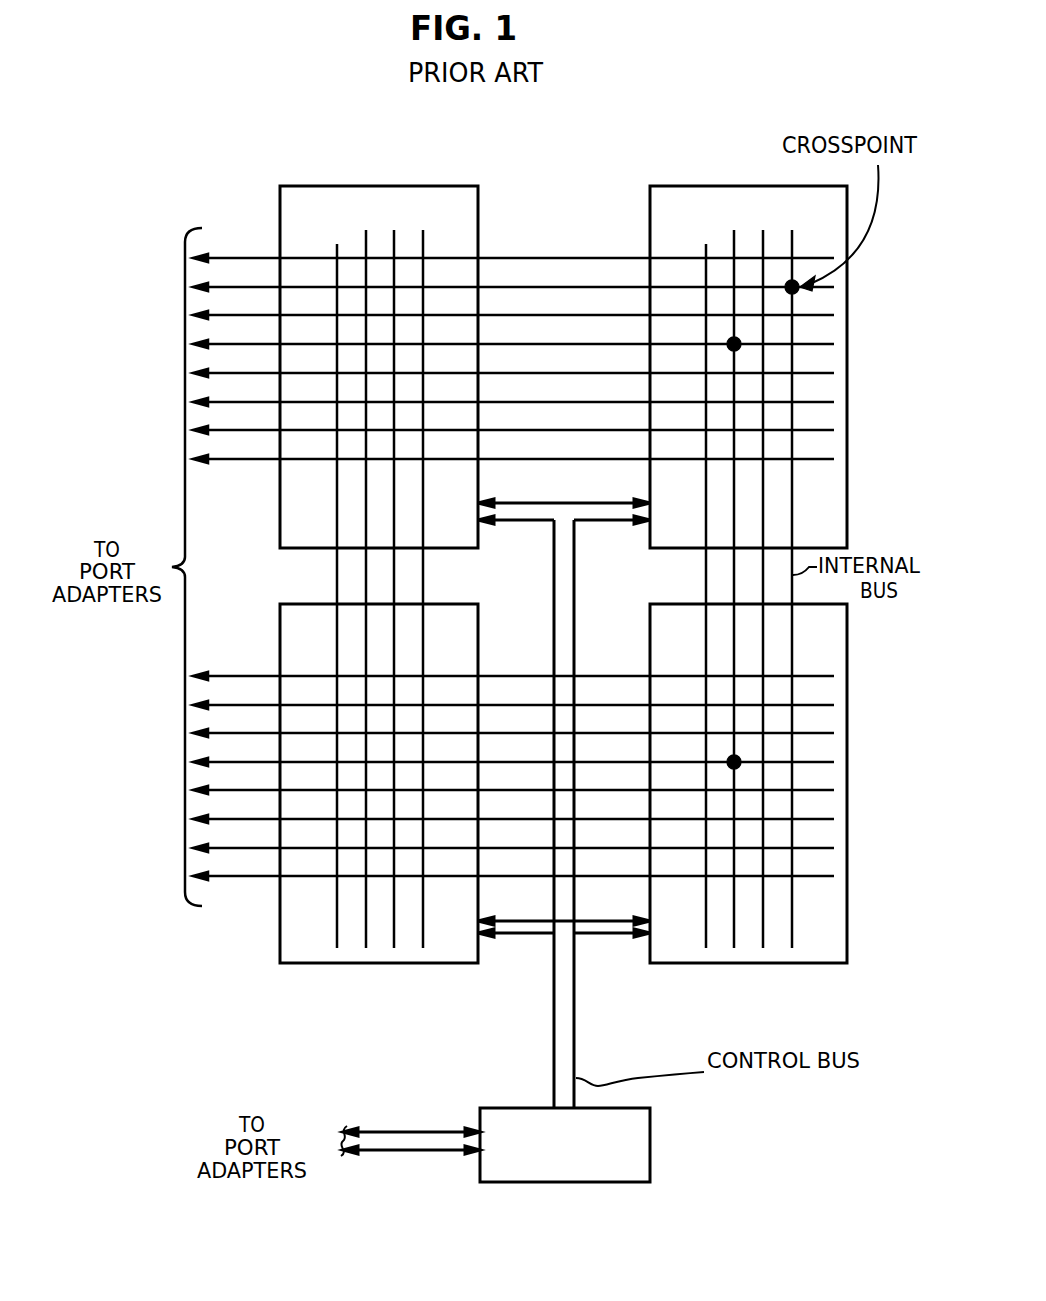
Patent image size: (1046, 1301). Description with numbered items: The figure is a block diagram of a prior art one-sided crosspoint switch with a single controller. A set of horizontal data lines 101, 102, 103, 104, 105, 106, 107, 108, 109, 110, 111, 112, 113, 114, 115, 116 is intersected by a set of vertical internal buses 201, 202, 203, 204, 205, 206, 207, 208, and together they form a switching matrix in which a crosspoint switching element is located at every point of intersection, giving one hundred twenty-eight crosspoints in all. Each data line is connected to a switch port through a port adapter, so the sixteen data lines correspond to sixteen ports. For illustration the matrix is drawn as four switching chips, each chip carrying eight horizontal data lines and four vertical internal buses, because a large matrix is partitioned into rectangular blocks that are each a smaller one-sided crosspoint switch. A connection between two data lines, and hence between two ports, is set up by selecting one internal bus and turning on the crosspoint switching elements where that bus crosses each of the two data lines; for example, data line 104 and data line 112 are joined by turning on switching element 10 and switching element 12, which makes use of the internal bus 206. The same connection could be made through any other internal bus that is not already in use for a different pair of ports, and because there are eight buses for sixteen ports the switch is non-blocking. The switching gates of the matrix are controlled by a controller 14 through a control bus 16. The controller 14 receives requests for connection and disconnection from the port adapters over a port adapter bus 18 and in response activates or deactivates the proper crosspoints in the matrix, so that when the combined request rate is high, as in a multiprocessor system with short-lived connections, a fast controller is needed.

The crosspoint switching element 10 is at (741, 342).
The crosspoint switching element 12 is at (740, 766).
The controller 14 is at (645, 1157).
The control bus 16 is at (554, 1040).
The port adapter bus 18 is at (430, 1143).
The data line 101 is at (268, 258).
The data line 102 is at (268, 287).
The data line 103 is at (268, 315).
The data line 104 is at (268, 344).
The data line 105 is at (268, 373).
The data line 106 is at (268, 402).
The data line 107 is at (268, 430).
The data line 108 is at (268, 459).
The data line 109 is at (276, 675).
The data line 110 is at (276, 704).
The data line 111 is at (276, 732).
The data line 112 is at (276, 761).
The data line 113 is at (276, 789).
The data line 114 is at (276, 818).
The data line 115 is at (276, 847).
The data line 116 is at (276, 875).
The internal bus 201 is at (337, 245).
The internal bus 202 is at (366, 232).
The internal bus 203 is at (394, 239).
The internal bus 204 is at (423, 249).
The internal bus 205 is at (706, 251).
The internal bus 206 is at (734, 235).
The internal bus 207 is at (763, 239).
The internal bus 208 is at (792, 248).